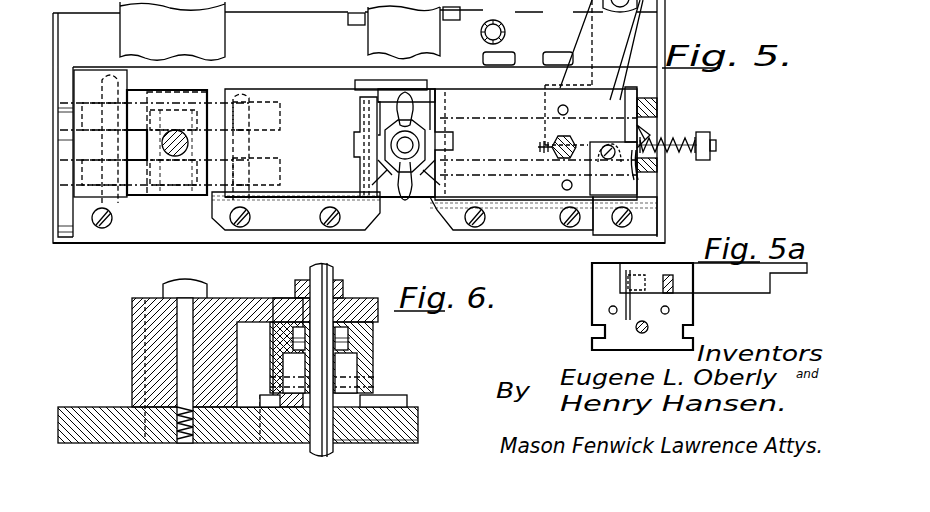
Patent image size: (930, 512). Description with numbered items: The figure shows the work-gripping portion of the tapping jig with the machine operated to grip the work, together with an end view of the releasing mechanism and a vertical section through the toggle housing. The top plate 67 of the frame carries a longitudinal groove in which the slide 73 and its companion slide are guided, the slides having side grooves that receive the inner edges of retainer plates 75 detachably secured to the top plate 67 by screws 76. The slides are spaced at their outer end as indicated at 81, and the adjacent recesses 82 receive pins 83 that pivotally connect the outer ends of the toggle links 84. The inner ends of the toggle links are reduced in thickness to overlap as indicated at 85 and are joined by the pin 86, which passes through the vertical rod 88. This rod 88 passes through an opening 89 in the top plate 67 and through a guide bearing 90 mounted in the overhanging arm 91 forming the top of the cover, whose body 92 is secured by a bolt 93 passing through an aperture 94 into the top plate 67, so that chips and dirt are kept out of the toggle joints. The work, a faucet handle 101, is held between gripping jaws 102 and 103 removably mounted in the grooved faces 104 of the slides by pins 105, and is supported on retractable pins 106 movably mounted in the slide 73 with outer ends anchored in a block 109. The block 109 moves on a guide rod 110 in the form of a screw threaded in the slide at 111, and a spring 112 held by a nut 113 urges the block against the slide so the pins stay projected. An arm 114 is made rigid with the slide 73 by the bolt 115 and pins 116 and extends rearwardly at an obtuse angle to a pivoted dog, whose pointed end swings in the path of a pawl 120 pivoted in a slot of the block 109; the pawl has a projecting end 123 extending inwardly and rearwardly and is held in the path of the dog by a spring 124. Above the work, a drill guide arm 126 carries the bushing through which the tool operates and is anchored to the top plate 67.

In FIG. 6, the top plate 67 is at (405, 415).
In FIG. 5, the slide 73 is at (536, 144).
In FIG. 5, the retainer plates 75 is at (240, 230).
In FIG. 6, the retainer plates 75 is at (400, 398).
In FIG. 5, the screws 76 is at (318, 217).
In FIG. 5, the space 81 is at (215, 98).
In FIG. 5, the recesses 82 is at (90, 105).
In FIG. 5, the pins 83 is at (108, 80).
In FIG. 5, the toggle links 84 is at (198, 108).
In FIG. 6, the toggle links 84 is at (292, 372).
In FIG. 5, the reduced overlapping inner ends 85 is at (172, 185).
In FIG. 6, the pin 86 is at (352, 343).
In FIG. 5, the vertical rod 88 is at (188, 143).
In FIG. 6, the vertical rod 88 is at (318, 428).
In FIG. 6, the opening 89 is at (355, 443).
In FIG. 6, the guide bearing 90 is at (335, 285).
In FIG. 6, the overhanging arm 91 is at (372, 300).
In FIG. 6, the body 92 is at (134, 330).
In FIG. 6, the bolt 93 is at (182, 285).
In FIG. 6, the aperture 94 is at (170, 348).
In FIG. 5, the faucet handle 101 is at (404, 202).
In FIG. 5, the gripping jaw 102 is at (383, 110).
In FIG. 5, the gripping jaw 103 is at (428, 122).
In FIG. 5, the grooved faces 104 is at (354, 152).
In FIG. 5, the pins 105 is at (358, 185).
In FIG. 5, the pins 106 is at (425, 95).
In FIG. 5A, the pins 106 is at (610, 312).
In FIG. 5, the block 109 is at (630, 190).
In FIG. 5A, the block 109 is at (595, 279).
In FIG. 5, the guide rod 110 is at (690, 135).
In FIG. 5A, the guide rod 110 is at (648, 327).
In FIG. 5, the threaded connection 111 is at (550, 147).
In FIG. 5, the spring 112 is at (680, 158).
In FIG. 5, the nut 113 is at (705, 160).
In FIG. 5, the arm 114 is at (601, 86).
In FIG. 5, the bolt 115 is at (560, 150).
In FIG. 5, the pins 116 is at (558, 108).
In FIG. 5, the pawl 120 is at (640, 132).
In FIG. 5A, the pawl 120 is at (666, 275).
In FIG. 5, the projecting end 123 is at (638, 128).
In FIG. 5, the spring 124 is at (645, 165).
In FIG. 5A, the spring 124 is at (625, 301).
In FIG. 5, the drill guide arm 126 is at (404, 32).